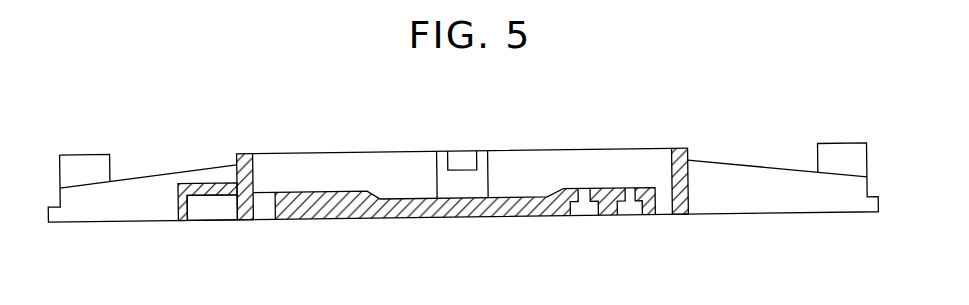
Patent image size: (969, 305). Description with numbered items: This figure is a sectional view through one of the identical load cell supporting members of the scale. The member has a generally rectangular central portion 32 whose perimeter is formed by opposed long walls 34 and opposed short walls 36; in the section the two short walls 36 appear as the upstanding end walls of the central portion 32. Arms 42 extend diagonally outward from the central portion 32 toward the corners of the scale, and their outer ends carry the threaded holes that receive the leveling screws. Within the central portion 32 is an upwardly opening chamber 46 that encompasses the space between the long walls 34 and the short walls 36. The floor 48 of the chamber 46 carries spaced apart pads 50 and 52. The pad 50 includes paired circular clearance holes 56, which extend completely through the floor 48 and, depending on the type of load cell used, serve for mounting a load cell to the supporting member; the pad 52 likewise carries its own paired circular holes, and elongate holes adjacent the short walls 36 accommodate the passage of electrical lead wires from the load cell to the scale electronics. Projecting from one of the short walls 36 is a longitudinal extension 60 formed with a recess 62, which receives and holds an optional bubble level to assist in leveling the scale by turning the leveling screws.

The central portion 32 is at (592, 132).
The long walls 34 is at (555, 160).
The short walls 36 is at (245, 157).
The arms 42 is at (145, 172).
The chamber 46 is at (388, 168).
The floor 48 is at (502, 198).
The pad 50 is at (604, 191).
The pad 52 is at (310, 190).
The circular clearance holes 56 is at (585, 212).
The longitudinal extension 60 is at (198, 185).
The recess 62 is at (188, 205).